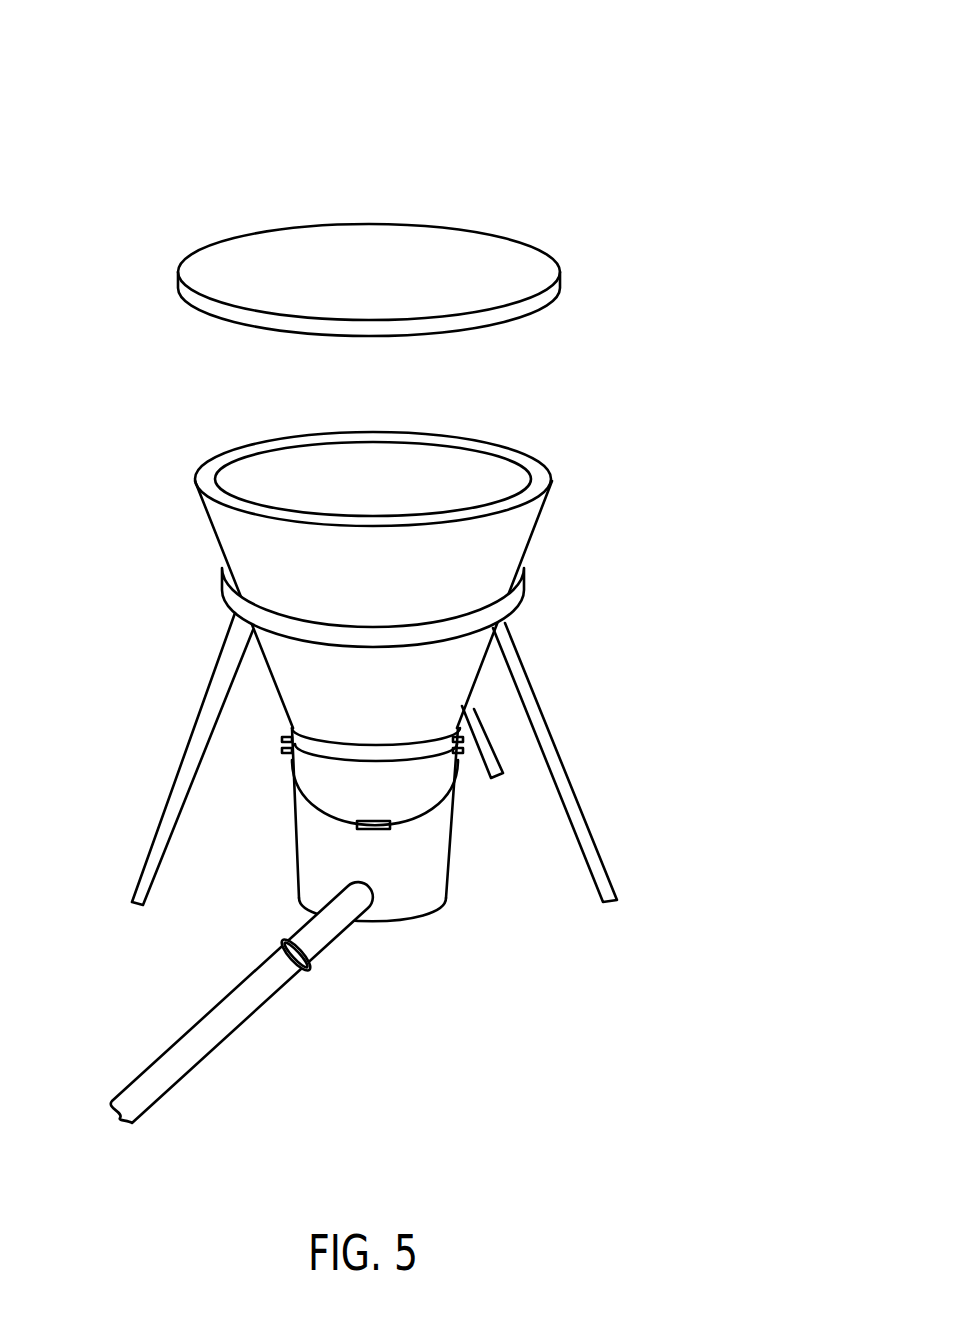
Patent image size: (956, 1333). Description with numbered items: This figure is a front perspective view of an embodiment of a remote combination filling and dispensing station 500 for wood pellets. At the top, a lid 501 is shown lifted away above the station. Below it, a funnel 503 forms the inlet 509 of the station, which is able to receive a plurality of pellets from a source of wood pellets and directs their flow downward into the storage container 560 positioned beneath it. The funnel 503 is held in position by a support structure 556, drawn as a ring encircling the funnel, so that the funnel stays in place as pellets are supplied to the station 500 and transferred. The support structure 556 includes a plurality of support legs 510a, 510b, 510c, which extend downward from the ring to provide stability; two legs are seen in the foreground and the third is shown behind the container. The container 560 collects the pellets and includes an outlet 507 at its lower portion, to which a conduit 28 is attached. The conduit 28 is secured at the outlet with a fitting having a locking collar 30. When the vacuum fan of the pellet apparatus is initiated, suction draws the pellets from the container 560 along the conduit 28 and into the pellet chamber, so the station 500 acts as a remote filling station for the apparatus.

The combination filling and dispensing station 500 is at (619, 123).
The lid 501 is at (288, 252).
The funnel 503 is at (507, 540).
The inlet 509 is at (428, 457).
The support structure 556 is at (237, 608).
The support leg 510a is at (565, 773).
The support leg 510b is at (165, 813).
The support leg 510c is at (488, 755).
The container 560 is at (423, 897).
The outlet 507 is at (320, 932).
The locking collar 30 is at (305, 975).
The conduit 28 is at (208, 1057).